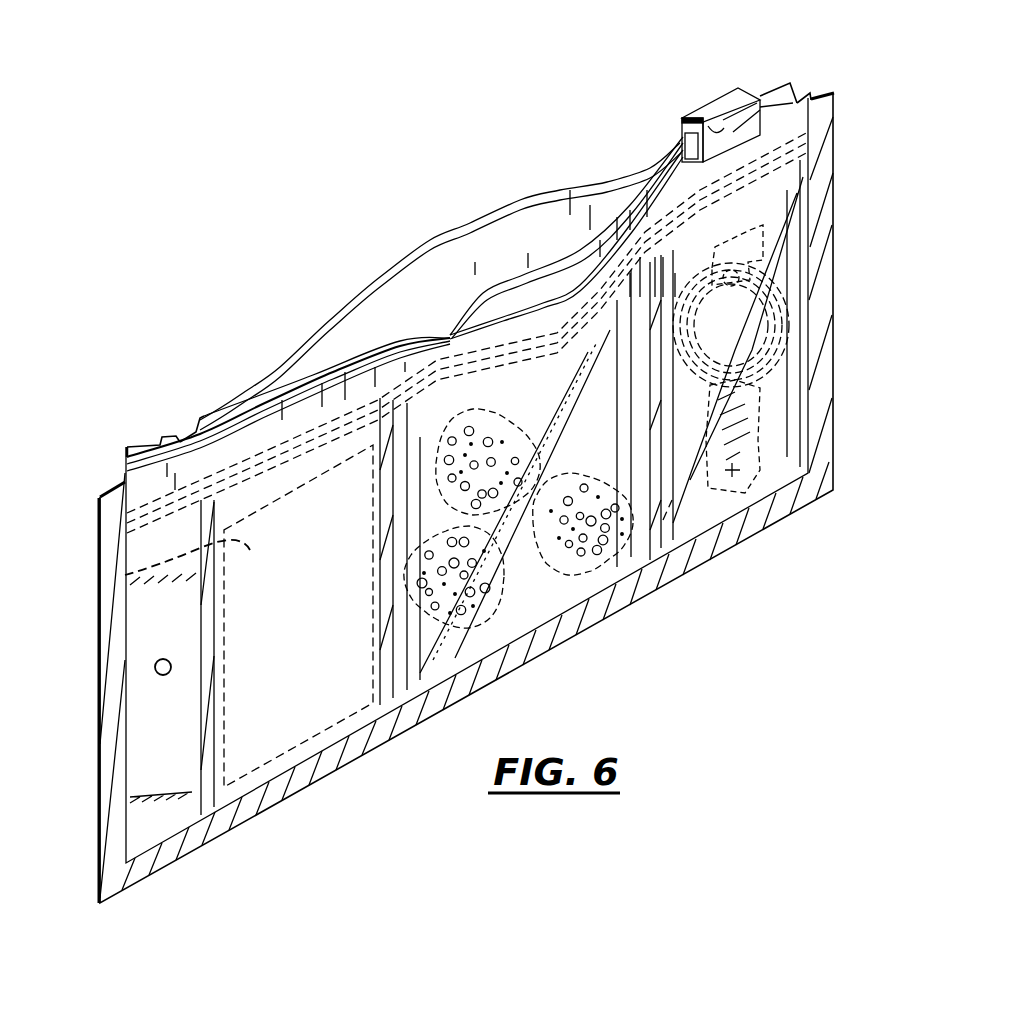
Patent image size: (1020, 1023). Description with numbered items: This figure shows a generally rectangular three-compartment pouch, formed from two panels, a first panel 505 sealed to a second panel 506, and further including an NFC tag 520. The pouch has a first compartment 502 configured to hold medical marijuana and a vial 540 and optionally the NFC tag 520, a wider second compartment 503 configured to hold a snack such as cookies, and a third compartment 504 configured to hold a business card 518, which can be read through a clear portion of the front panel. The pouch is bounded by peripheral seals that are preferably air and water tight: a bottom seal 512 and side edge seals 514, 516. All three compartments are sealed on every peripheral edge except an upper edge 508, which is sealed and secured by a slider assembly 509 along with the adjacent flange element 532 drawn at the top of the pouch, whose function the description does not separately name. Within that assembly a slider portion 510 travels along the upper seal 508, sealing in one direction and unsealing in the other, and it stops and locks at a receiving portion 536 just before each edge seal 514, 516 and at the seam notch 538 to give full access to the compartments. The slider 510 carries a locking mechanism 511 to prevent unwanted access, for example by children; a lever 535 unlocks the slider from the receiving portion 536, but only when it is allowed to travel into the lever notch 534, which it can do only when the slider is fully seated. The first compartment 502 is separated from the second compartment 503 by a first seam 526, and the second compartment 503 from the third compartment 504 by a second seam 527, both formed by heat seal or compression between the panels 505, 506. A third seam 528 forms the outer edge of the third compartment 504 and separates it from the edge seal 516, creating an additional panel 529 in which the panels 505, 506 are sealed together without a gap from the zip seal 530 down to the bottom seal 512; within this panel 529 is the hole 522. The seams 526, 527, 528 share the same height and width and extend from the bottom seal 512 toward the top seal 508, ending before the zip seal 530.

The first compartment 502 is at (773, 478).
The second compartment 503 is at (533, 598).
The third compartment 504 is at (307, 753).
The first panel 505 is at (556, 397).
The second panel 506 is at (843, 290).
The upper edge 508 is at (420, 258).
The slider assembly 509 is at (745, 45).
The slider portion 510 is at (682, 128).
The locking mechanism 511 is at (717, 127).
The bottom seal 512 is at (600, 612).
The edge seal 514 is at (828, 405).
The edge seal 516 is at (107, 630).
The business card 518 is at (125, 576).
The NFC tag 520 is at (760, 322).
The hole 522 is at (156, 669).
The first seam 526 is at (645, 565).
The second seam 527 is at (387, 708).
The third seam 528 is at (207, 800).
The panel 529 is at (140, 830).
The zip seal 530 is at (522, 272).
The front zipper flange 532 is at (477, 265).
The lever notch 534 is at (202, 420).
The lever 535 is at (723, 107).
The receiving portion 536 is at (140, 445).
The seam notch 538 is at (123, 482).
The vial 540 is at (735, 488).